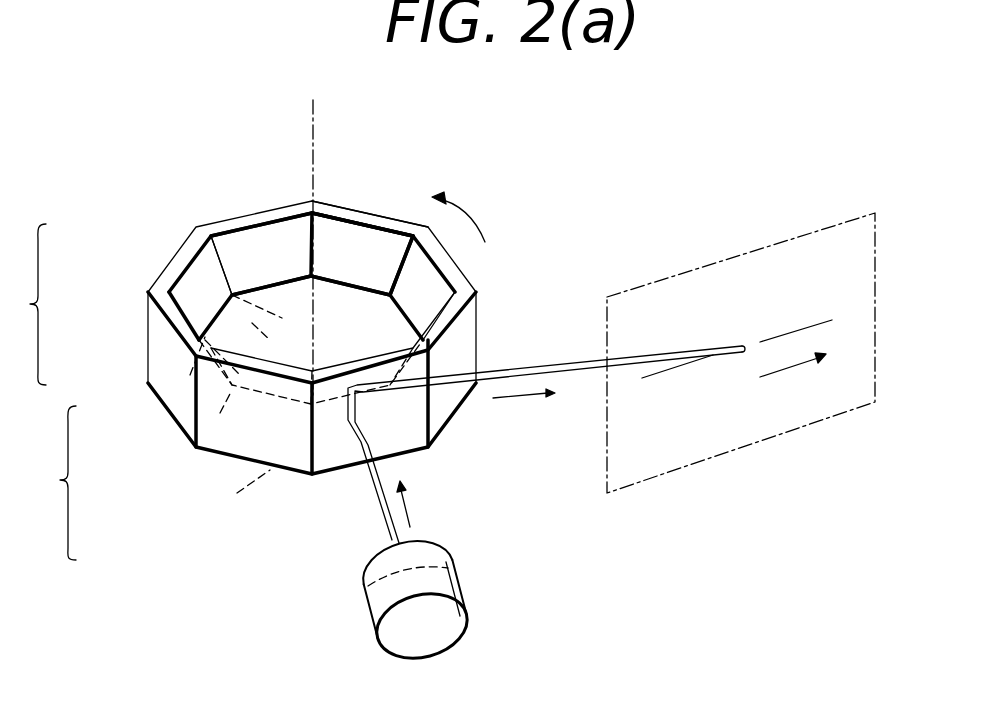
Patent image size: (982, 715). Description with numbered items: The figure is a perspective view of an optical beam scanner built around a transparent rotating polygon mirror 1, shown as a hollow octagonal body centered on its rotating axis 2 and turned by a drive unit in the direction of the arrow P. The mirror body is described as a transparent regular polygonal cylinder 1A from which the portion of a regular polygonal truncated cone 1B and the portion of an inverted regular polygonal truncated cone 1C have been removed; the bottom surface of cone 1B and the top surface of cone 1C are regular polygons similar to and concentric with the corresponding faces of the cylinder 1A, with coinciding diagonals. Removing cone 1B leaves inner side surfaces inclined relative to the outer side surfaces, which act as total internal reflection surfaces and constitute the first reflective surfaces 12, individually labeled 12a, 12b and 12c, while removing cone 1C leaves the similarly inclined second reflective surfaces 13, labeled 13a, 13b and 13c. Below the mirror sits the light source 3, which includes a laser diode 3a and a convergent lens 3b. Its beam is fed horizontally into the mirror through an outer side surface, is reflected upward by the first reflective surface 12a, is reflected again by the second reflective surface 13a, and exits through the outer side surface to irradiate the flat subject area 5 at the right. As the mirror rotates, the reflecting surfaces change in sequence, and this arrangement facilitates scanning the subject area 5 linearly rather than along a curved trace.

The rotating polygon mirror 1 is at (482, 317).
The transparent regular polygonal cylinder 1A is at (400, 218).
The regular polygonal truncated cone 1B is at (355, 297).
The regular polygonal truncated cone 1C is at (332, 235).
The rotating axis 2 is at (297, 307).
The light source 3 is at (453, 586).
The laser diode 3a is at (447, 582).
The convergent lens 3b is at (430, 545).
The subject area 5 is at (848, 222).
The first reflective surfaces 12 is at (152, 448).
The first reflective surface 12a is at (270, 470).
The first reflective surface 12b is at (232, 390).
The first reflective surface 12c is at (205, 337).
The second reflective surfaces 13 is at (143, 304).
The second reflective surface 13a is at (282, 318).
The second reflective surface 13b is at (270, 340).
The second reflective surface 13c is at (240, 375).
The arrow P is at (460, 214).